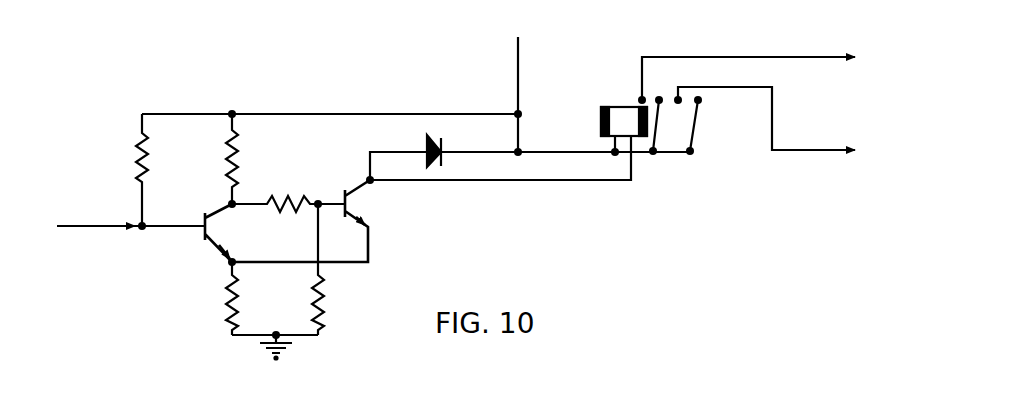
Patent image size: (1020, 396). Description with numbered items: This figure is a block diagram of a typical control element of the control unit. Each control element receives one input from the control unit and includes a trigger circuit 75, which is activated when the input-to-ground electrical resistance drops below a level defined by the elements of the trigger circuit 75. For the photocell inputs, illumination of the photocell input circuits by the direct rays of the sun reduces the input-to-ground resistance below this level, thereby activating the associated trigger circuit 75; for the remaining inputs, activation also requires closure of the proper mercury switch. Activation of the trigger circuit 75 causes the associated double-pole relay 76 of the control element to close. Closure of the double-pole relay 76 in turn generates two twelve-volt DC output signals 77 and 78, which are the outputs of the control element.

The trigger circuit 75 is at (522, 212).
The double-pole relay 76 is at (624, 110).
The 12 VDC output signal 77 is at (746, 93).
The 12 VDC output signal 78 is at (764, 121).